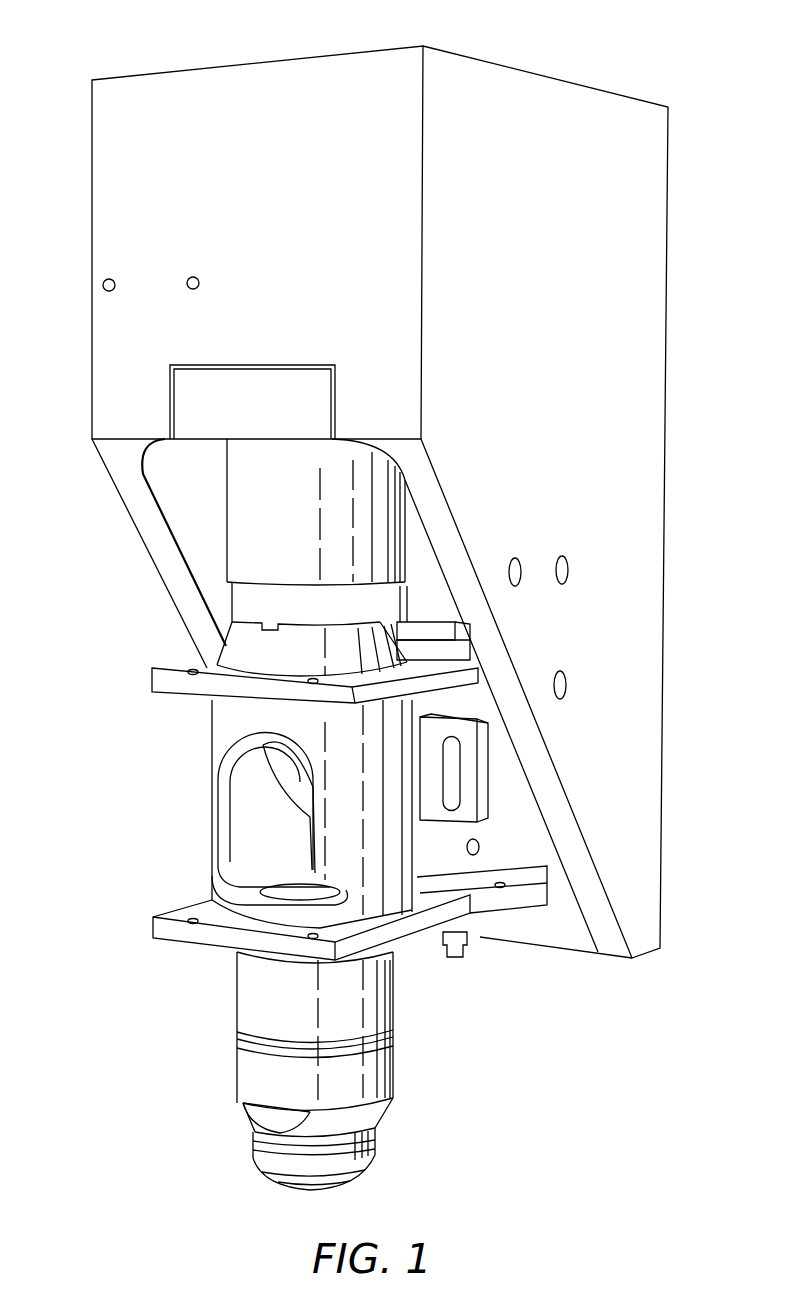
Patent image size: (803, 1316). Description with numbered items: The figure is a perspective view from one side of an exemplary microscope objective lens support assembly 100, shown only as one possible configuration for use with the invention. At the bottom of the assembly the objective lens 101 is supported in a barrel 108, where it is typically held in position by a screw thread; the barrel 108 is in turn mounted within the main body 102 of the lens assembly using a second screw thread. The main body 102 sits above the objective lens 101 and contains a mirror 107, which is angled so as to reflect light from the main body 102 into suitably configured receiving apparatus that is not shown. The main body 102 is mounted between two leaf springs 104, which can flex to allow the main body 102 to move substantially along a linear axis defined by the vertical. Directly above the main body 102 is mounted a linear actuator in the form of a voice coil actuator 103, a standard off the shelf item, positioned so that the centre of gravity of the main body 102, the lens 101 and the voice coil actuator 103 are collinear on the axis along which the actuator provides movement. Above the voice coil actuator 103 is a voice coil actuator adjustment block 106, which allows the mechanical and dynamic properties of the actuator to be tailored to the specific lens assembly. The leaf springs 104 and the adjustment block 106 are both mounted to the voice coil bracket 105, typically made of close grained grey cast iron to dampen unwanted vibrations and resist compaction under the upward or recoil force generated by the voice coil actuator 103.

The objective lens support assembly 100 is at (661, 72).
The objective lens 101 is at (253, 1142).
The main body 102 is at (212, 727).
The voice coil actuator 103 is at (238, 472).
The leaf springs 104 is at (151, 668).
The voice coil bracket 105 is at (658, 330).
The voice coil actuator adjustment block 106 is at (231, 389).
The mirror 107 is at (295, 772).
The barrel 108 is at (237, 1067).